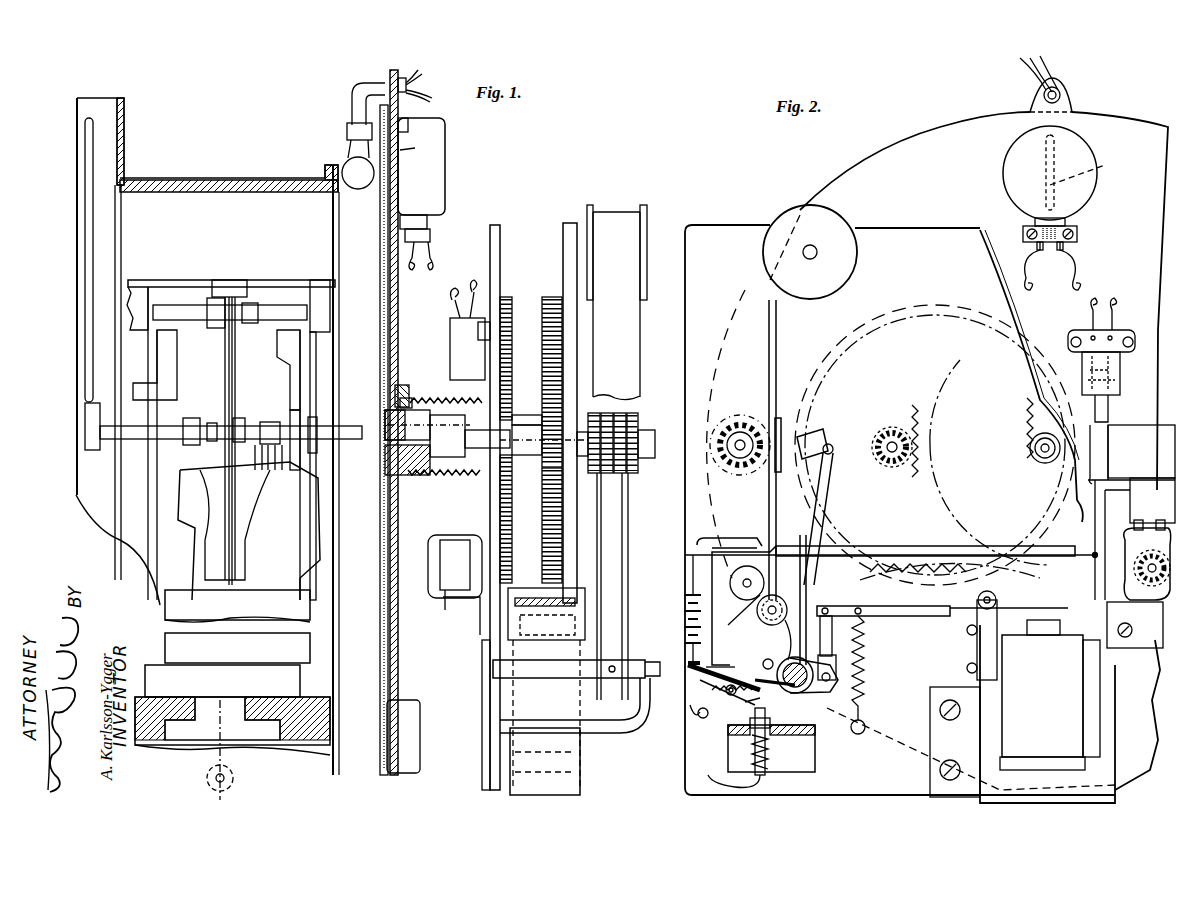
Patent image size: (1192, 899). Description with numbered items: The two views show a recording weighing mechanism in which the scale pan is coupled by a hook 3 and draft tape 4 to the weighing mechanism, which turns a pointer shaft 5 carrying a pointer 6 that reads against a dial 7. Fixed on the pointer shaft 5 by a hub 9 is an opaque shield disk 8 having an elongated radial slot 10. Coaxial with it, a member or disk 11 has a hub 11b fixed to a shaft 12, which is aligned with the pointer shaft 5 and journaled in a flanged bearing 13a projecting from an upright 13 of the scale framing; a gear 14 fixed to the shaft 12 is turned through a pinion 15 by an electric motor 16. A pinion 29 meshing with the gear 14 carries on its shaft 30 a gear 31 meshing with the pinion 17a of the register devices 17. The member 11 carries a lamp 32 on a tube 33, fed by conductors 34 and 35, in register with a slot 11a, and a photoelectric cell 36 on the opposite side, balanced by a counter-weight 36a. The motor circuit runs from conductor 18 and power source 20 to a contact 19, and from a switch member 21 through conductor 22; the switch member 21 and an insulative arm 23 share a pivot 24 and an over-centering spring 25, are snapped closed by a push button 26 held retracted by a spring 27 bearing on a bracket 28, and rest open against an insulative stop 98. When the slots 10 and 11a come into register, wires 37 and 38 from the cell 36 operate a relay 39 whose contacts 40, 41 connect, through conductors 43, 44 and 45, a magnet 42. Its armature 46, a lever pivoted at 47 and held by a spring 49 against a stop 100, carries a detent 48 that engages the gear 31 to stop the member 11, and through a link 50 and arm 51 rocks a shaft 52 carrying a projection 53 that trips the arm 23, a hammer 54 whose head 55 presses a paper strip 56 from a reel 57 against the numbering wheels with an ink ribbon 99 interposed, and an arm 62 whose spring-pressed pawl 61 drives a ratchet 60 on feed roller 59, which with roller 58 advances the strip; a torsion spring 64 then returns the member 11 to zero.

In FIG. 1, the hook 3 is at (235, 780).
In FIG. 1, the draft tape 4 is at (215, 742).
In FIG. 1, the pointer shaft 5 is at (148, 437).
In FIG. 1, the pointer 6 is at (90, 325).
In FIG. 1, the dial 7 is at (125, 130).
In FIG. 1, the disk 8 is at (388, 335).
In FIG. 1, the hub 9 is at (380, 455).
In FIG. 1, the slot 10 is at (405, 150).
In FIG. 1, the member or disk 11 is at (392, 325).
In FIG. 2, the member or disk 11 is at (930, 167).
In FIG. 1, the slot 11a is at (398, 160).
In FIG. 2, the slot 11a is at (1095, 165).
In FIG. 1, the hub 11b is at (402, 385).
In FIG. 1, the shaft 12 is at (425, 478).
In FIG. 2, the shaft 12 is at (1045, 463).
In FIG. 1, the upright 13 is at (492, 228).
In FIG. 2, the upright 13 is at (688, 297).
In FIG. 1, the flanged bearing 13a is at (478, 475).
In FIG. 1, the gear 14 is at (512, 330).
In FIG. 2, the gear 14 is at (990, 572).
In FIG. 1, the pinion 15 is at (512, 505).
In FIG. 2, the pinion 15 is at (1135, 625).
In FIG. 1, the electric motor 16 is at (455, 585).
In FIG. 2, the electric motor 16 is at (1138, 560).
In FIG. 1, the register device 17 is at (594, 476).
In FIG. 2, the register device 17 is at (738, 468).
In FIG. 1, the pinion 17a is at (598, 520).
In FIG. 2, the pinion 17a is at (742, 432).
In FIG. 2, the conductor 18 is at (668, 560).
In FIG. 2, the contact 19 is at (690, 670).
In FIG. 2, the power source 20 is at (688, 606).
In FIG. 2, the switch member 21 is at (690, 712).
In FIG. 2, the conductor 22 is at (712, 632).
In FIG. 2, the arm 23 is at (775, 689).
In FIG. 2, the pivot 24 is at (730, 700).
In FIG. 2, the over-centering spring 25 is at (753, 657).
In FIG. 2, the push button 26 is at (727, 771).
In FIG. 2, the spring 27 is at (768, 760).
In FIG. 1, the bracket 28 is at (588, 722).
In FIG. 2, the bracket 28 is at (818, 750).
In FIG. 1, the pinion 29 is at (528, 425).
In FIG. 2, the pinion 29 is at (888, 432).
In FIG. 1, the shaft 30 is at (548, 470).
In FIG. 2, the shaft 30 is at (888, 458).
In FIG. 1, the gear 31 is at (563, 562).
In FIG. 2, the gear 31 is at (935, 445).
In FIG. 1, the electric lamp 32 is at (356, 186).
In FIG. 1, the tube 33 is at (360, 83).
In FIG. 1, the conductor 34 is at (414, 72).
In FIG. 2, the conductor 34 is at (1048, 62).
In FIG. 1, the conductor 35 is at (425, 88).
In FIG. 2, the conductor 35 is at (1030, 72).
In FIG. 1, the photoelectric cell 36 is at (447, 166).
In FIG. 2, the photoelectric cell 36 is at (1050, 176).
In FIG. 1, the counter-weight 36a is at (420, 736).
In FIG. 1, the circuit wire 37 is at (414, 250).
In FIG. 2, the circuit wire 37 is at (1025, 262).
In FIG. 1, the circuit wire 38 is at (430, 245).
In FIG. 2, the circuit wire 38 is at (1078, 268).
In FIG. 1, the relay device 39 is at (455, 360).
In FIG. 2, the relay device 39 is at (1119, 409).
In FIG. 2, the contact 40 is at (1090, 372).
In FIG. 2, the contact 41 is at (1115, 355).
In FIG. 1, the magnet 42 is at (582, 756).
In FIG. 2, the magnet 42 is at (971, 711).
In FIG. 2, the conductor 43 is at (1141, 451).
In FIG. 2, the conductor 44 is at (1096, 454).
In FIG. 2, the conductor 45 is at (1105, 562).
In FIG. 2, the armature 46 is at (880, 612).
In FIG. 1, the pivot 47 is at (590, 600).
In FIG. 2, the pivot 47 is at (982, 594).
In FIG. 2, the detent 48 is at (920, 575).
In FIG. 2, the spring 49 is at (865, 675).
In FIG. 2, the link 50 is at (821, 682).
In FIG. 2, the arm 51 is at (813, 706).
In FIG. 1, the shaft 52 is at (637, 662).
In FIG. 2, the shaft 52 is at (680, 640).
In FIG. 1, the projection or finger 53 is at (550, 676).
In FIG. 2, the projection or finger 53 is at (776, 675).
In FIG. 1, the hammer 54 is at (626, 522).
In FIG. 2, the hammer 54 is at (822, 488).
In FIG. 2, the head or pad 55 is at (812, 436).
In FIG. 1, the paper strip 56 is at (615, 210).
In FIG. 2, the paper strip 56 is at (774, 340).
In FIG. 1, the reel 57 is at (648, 212).
In FIG. 2, the reel 57 is at (810, 252).
In FIG. 2, the feeding roller 58 is at (738, 595).
In FIG. 2, the feeding roller 59 is at (778, 602).
In FIG. 2, the ratchet 60 is at (774, 640).
In FIG. 2, the pawl 61 is at (794, 600).
In FIG. 2, the arm 62 is at (820, 610).
In FIG. 1, the torsion spring 64 is at (450, 405).
In FIG. 2, the insulative stop 98 is at (700, 718).
In FIG. 2, the ink-carrying ribbon 99 is at (781, 432).
In FIG. 2, the stop 100 is at (950, 718).